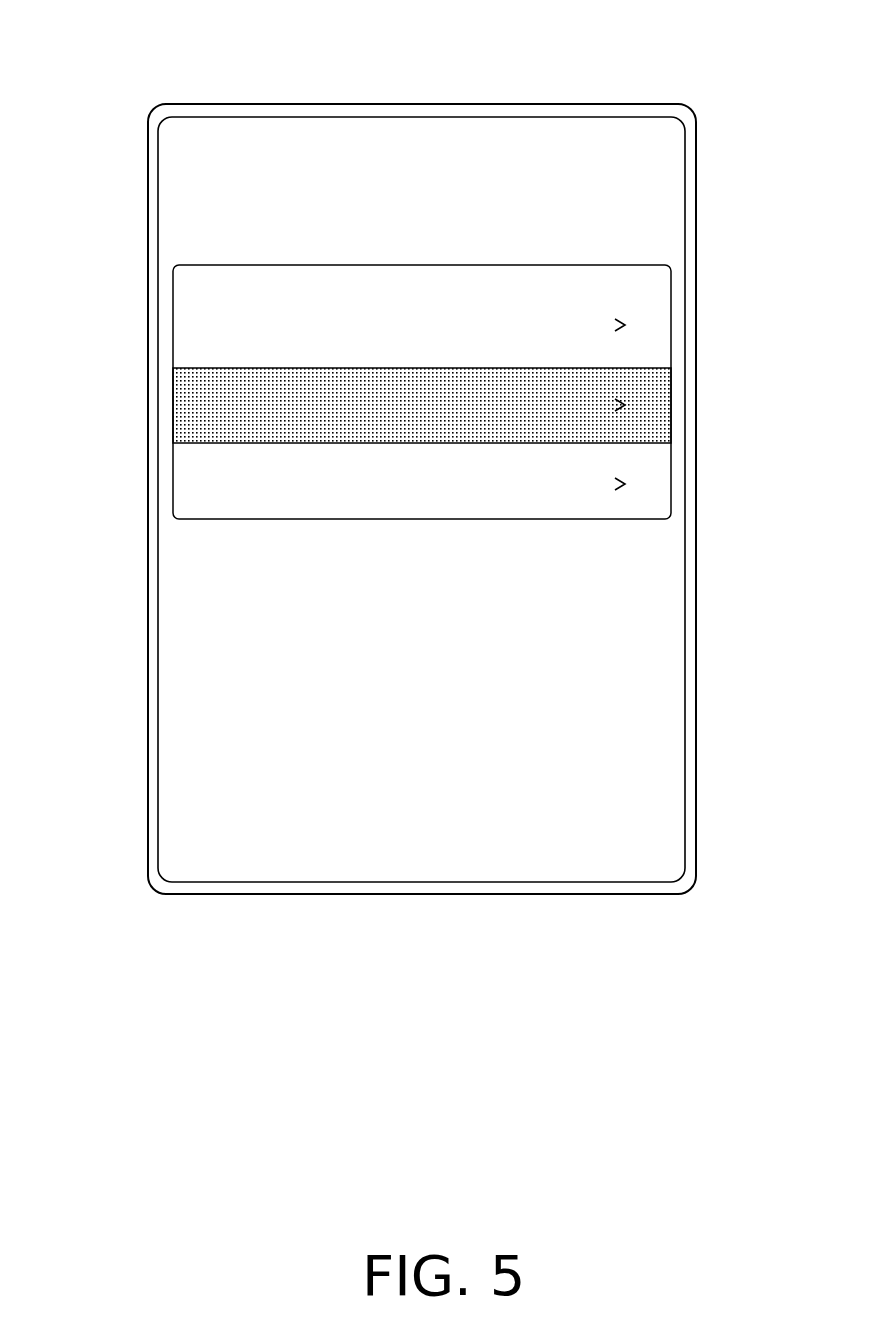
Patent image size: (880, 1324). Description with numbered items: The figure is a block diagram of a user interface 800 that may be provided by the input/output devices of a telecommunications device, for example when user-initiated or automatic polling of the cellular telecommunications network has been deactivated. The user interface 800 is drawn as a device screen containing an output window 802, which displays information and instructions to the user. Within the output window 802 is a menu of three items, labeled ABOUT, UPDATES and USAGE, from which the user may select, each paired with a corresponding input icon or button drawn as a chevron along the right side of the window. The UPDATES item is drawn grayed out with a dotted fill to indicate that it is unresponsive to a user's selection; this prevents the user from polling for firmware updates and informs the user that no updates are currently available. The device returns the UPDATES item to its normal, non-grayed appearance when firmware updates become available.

The user interface 800 is at (109, 38).
The output window 802 is at (172, 270).